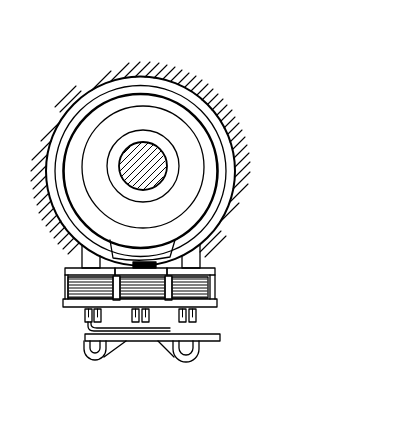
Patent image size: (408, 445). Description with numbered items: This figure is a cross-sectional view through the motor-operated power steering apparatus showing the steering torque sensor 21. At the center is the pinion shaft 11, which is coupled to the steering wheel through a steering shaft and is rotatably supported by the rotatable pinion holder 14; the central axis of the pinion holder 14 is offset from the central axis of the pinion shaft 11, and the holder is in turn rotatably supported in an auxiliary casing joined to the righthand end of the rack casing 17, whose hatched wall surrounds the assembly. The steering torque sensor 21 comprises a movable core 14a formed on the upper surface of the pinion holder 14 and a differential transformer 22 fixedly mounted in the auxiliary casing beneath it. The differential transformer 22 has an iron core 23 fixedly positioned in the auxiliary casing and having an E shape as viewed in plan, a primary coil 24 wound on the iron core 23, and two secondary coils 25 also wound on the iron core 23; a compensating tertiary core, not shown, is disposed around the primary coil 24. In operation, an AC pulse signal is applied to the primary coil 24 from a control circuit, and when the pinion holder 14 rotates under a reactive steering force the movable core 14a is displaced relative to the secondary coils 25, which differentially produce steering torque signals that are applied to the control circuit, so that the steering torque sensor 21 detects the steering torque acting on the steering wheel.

The pinion shaft 11 is at (143, 152).
The rack casing 17 is at (220, 109).
The pinion holder 14 is at (213, 169).
The movable core 14a is at (164, 253).
The steering torque sensor 21 is at (221, 257).
The differential transformer 22 is at (224, 299).
The secondary coils 25 is at (83, 287).
The primary coil 24 is at (138, 300).
The iron core 23 is at (168, 320).